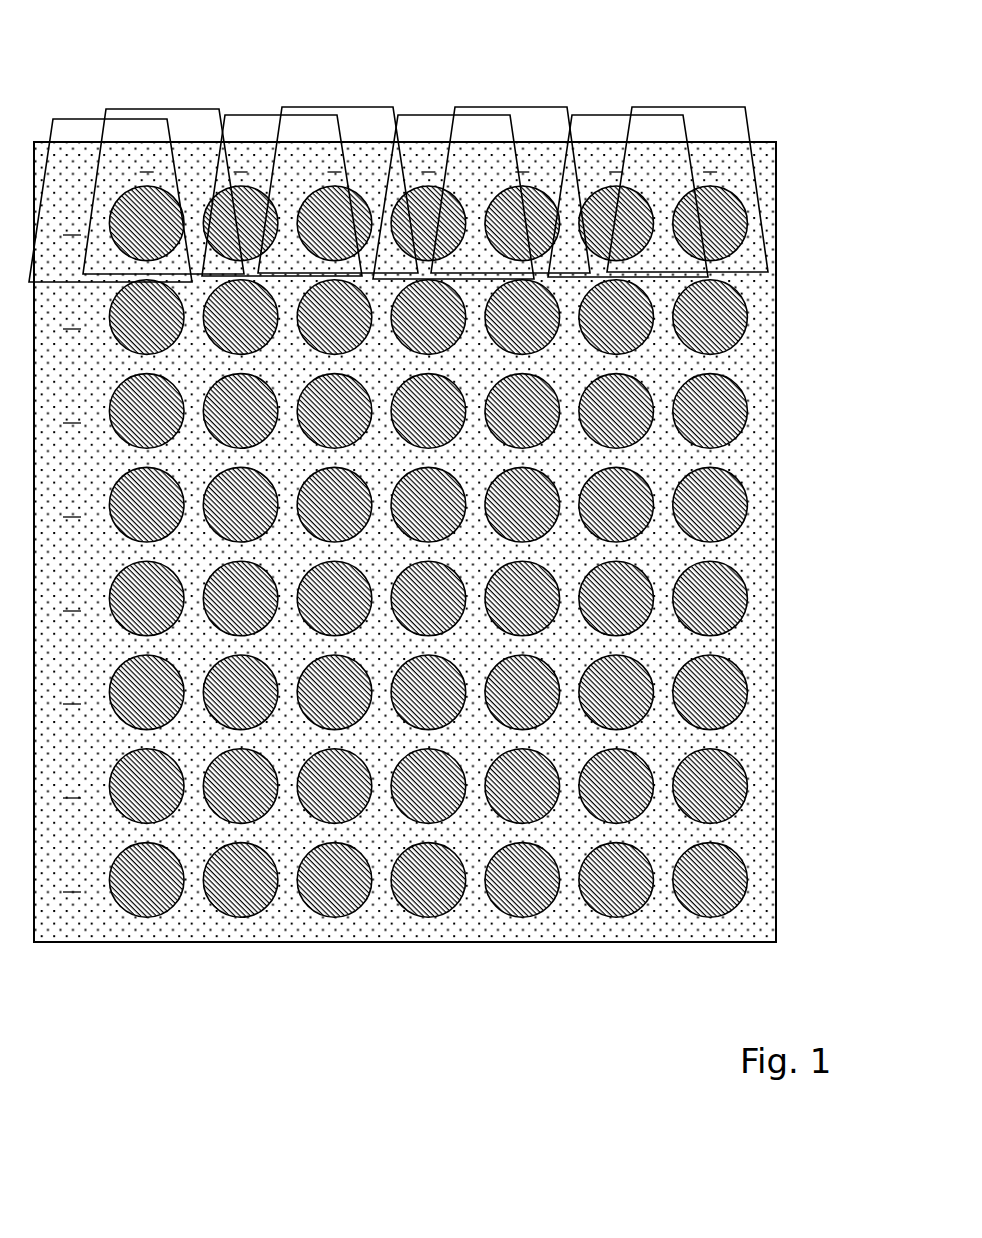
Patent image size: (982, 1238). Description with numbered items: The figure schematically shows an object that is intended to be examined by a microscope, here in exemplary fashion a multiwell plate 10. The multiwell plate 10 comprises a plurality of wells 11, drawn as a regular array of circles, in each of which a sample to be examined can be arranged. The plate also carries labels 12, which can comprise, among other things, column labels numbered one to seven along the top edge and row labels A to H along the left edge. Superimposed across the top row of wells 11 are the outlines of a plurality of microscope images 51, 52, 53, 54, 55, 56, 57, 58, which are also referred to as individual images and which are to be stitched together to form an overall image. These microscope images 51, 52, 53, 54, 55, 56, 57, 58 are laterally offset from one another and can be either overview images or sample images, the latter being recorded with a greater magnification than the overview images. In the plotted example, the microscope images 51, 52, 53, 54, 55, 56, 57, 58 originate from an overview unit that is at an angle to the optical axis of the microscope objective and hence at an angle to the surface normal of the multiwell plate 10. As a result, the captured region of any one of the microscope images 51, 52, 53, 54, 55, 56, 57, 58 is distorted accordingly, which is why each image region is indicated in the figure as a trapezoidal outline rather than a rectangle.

The multiwell plate 10 is at (779, 310).
The wells 11 is at (337, 883).
The labels 12 is at (73, 907).
The microscope image 51 is at (75, 117).
The microscope image 52 is at (167, 108).
The microscope image 53 is at (253, 114).
The microscope image 54 is at (350, 107).
The microscope image 55 is at (432, 115).
The microscope image 56 is at (522, 107).
The microscope image 57 is at (605, 115).
The microscope image 58 is at (702, 107).